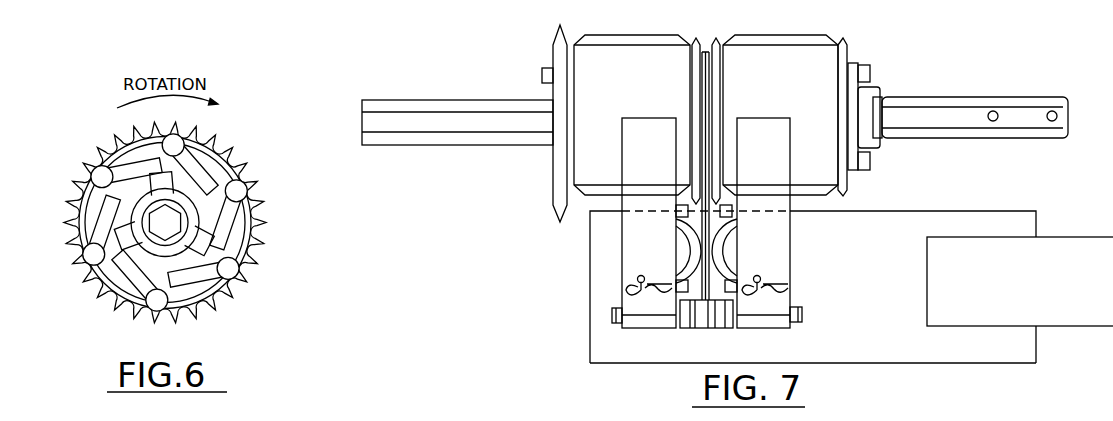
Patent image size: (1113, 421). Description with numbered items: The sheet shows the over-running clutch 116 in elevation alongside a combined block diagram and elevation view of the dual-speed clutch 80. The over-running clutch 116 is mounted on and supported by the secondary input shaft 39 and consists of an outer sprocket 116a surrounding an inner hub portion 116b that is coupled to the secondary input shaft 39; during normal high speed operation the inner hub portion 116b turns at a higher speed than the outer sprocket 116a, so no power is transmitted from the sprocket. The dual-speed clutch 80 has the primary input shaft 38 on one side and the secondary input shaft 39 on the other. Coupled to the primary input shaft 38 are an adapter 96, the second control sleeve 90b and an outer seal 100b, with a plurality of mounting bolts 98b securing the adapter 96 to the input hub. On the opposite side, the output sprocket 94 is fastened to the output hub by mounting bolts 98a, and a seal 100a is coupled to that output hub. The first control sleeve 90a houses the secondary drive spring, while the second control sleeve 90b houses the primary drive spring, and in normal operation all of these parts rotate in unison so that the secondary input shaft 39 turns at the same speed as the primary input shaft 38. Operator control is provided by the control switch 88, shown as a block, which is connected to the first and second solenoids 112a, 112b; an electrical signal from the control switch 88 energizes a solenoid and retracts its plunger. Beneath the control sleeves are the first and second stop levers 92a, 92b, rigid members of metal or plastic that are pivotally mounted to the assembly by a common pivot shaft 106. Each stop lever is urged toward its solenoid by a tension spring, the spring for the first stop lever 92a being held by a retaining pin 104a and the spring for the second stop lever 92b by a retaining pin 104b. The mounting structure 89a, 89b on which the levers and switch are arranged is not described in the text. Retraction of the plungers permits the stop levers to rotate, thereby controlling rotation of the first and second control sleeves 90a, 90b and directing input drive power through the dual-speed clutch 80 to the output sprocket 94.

In FIG. 7, the primary input shaft 38 is at (952, 115).
In FIG. 6, the secondary input shaft 39 is at (170, 223).
In FIG. 7, the secondary input shaft 39 is at (412, 122).
In FIG. 7, the dual-speed clutch 80 is at (707, 36).
In FIG. 7, the control switch 88 is at (1093, 311).
In FIG. 7, the base plate portion 89a is at (603, 363).
In FIG. 7, the base plate portion 89b is at (985, 208).
In FIG. 7, the first control sleeve 90a is at (657, 88).
In FIG. 7, the second control sleeve 90b is at (798, 86).
In FIG. 7, the first stop lever 92a is at (670, 171).
In FIG. 7, the second stop lever 92b is at (783, 172).
In FIG. 7, the output sprocket 94 is at (560, 57).
In FIG. 7, the adapter 96 is at (856, 63).
In FIG. 7, the mounting bolts 98a is at (542, 77).
In FIG. 7, the mounting bolts 98b is at (871, 160).
In FIG. 7, the seal 100a is at (574, 196).
In FIG. 7, the outer seal 100b is at (846, 44).
In FIG. 7, the retaining pin 104a is at (622, 290).
In FIG. 7, the retaining pin 104b is at (788, 288).
In FIG. 7, the pivot shaft 106 is at (797, 318).
In FIG. 7, the first solenoid 112a is at (683, 243).
In FIG. 7, the second solenoid 112b is at (728, 242).
In FIG. 6, the over-running clutch 116 is at (263, 280).
In FIG. 6, the outer sprocket 116a is at (63, 237).
In FIG. 6, the inner hub portion 116b is at (215, 170).